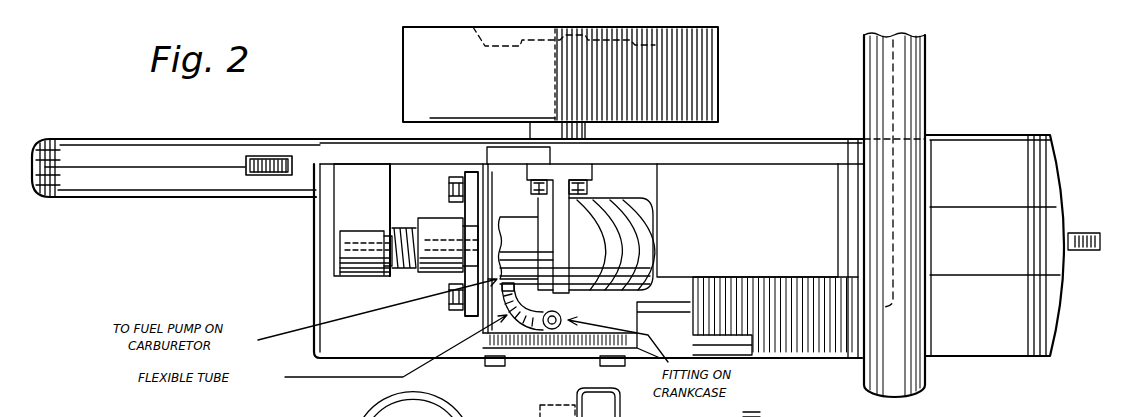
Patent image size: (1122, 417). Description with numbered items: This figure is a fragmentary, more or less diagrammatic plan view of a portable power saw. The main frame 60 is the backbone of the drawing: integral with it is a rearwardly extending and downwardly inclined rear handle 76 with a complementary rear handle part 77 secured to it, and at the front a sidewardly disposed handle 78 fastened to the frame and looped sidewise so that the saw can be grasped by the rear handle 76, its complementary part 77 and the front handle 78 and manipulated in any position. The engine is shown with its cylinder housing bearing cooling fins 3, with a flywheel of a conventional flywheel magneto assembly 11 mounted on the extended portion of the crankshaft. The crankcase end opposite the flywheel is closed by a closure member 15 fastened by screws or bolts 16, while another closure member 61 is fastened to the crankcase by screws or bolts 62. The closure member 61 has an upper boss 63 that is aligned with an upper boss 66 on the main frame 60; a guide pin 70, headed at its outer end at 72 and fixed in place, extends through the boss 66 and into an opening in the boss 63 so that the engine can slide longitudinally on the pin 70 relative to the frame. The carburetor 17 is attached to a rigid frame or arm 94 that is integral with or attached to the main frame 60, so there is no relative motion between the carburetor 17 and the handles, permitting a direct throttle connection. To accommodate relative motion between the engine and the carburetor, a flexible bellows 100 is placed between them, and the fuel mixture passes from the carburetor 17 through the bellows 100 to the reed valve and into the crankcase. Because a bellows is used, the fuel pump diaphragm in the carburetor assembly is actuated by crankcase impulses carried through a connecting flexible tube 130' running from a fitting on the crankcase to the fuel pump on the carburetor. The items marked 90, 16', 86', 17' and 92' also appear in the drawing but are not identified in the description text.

The flywheel magneto assembly 11 is at (403, 47).
The main frame 60 is at (372, 138).
The rear handle 76 is at (118, 141).
The complementary rear handle part 77 is at (163, 198).
The front handle 78 is at (915, 73).
The guide pin heads 72 is at (335, 251).
The upper boss 66 is at (352, 277).
The guide pins 70 is at (404, 228).
The washer 90 is at (405, 270).
The upper boss 63 is at (437, 272).
The screws or bolts 62 is at (449, 185).
The closure member 61 is at (470, 183).
The rigid frame or arm 94 is at (560, 171).
The flexible bellows 100 is at (596, 216).
The carburetor 17 is at (575, 244).
The connecting flexible tube 130' is at (533, 349).
The closure member 15 is at (563, 349).
The fitting 16' is at (487, 371).
The screws or bolts 16 is at (628, 371).
The cooling fins 3 is at (826, 357).
The flywheel 86' is at (428, 404).
The carburetor 17' is at (567, 402).
The engine part 92' is at (766, 406).